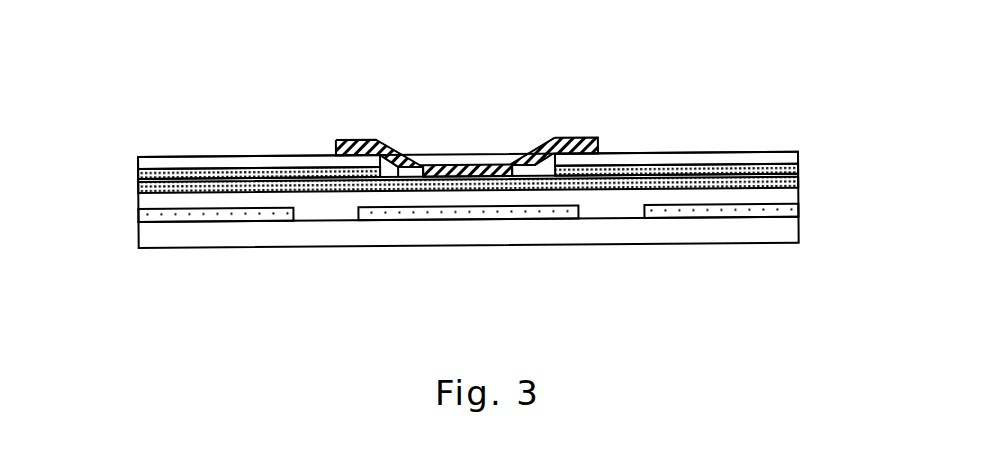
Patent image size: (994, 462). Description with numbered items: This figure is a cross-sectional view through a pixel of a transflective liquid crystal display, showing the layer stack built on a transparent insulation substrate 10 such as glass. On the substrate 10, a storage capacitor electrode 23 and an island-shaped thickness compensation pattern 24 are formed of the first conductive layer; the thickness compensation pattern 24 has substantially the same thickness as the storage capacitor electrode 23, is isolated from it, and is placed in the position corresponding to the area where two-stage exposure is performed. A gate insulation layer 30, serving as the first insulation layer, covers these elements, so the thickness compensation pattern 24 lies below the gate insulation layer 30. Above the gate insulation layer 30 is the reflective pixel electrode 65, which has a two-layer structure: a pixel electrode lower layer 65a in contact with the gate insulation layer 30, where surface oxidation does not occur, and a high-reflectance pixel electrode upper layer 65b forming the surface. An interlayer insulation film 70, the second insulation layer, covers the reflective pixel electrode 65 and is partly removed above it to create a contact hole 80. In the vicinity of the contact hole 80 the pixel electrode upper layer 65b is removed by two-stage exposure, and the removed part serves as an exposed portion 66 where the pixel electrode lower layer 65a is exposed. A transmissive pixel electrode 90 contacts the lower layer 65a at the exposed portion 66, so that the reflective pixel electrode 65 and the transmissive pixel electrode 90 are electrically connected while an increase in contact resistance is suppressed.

The transparent insulation substrate 10 is at (790, 235).
The storage capacitor electrode 23 is at (176, 222).
The thickness compensation pattern 24 is at (483, 221).
The gate insulation layer 30 is at (791, 196).
The reflective pixel electrode 65 is at (124, 180).
The pixel electrode lower layer 65a is at (797, 178).
The pixel electrode upper layer 65b is at (797, 158).
The exposed portion 66 is at (404, 158).
The interlayer insulation film 70 is at (225, 156).
The contact hole 80 is at (500, 117).
The transmissive pixel electrode 90 is at (578, 139).